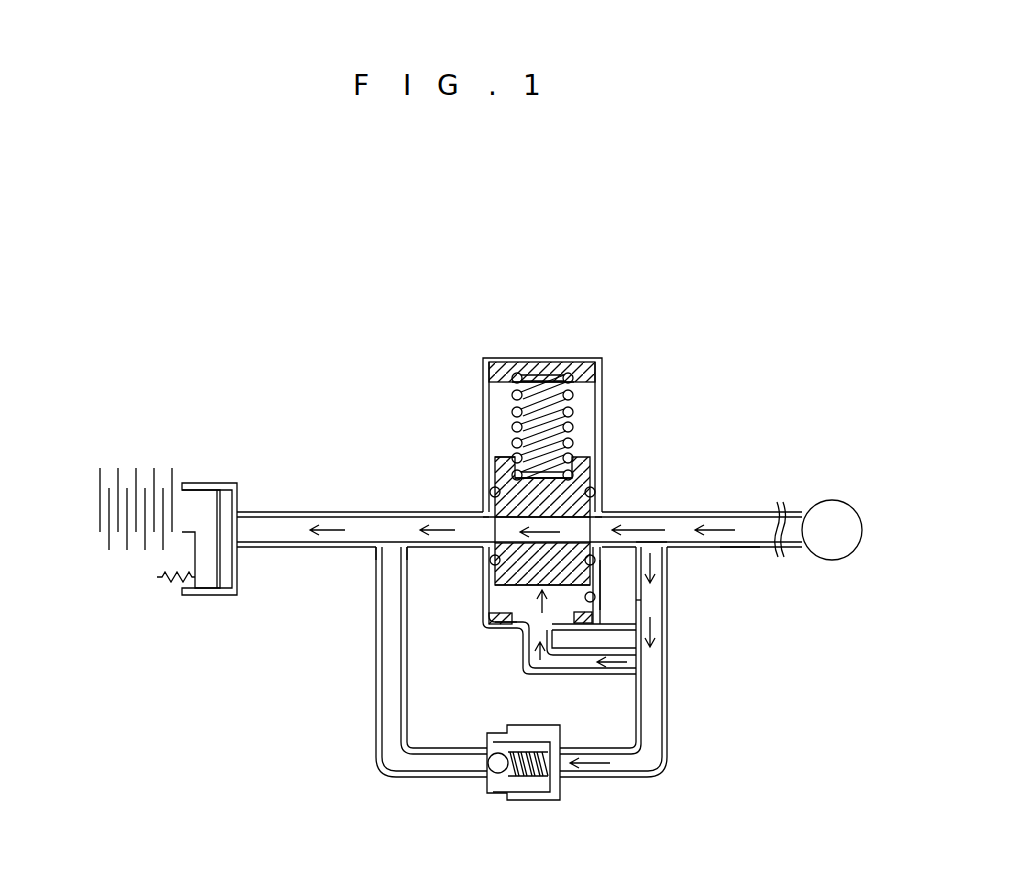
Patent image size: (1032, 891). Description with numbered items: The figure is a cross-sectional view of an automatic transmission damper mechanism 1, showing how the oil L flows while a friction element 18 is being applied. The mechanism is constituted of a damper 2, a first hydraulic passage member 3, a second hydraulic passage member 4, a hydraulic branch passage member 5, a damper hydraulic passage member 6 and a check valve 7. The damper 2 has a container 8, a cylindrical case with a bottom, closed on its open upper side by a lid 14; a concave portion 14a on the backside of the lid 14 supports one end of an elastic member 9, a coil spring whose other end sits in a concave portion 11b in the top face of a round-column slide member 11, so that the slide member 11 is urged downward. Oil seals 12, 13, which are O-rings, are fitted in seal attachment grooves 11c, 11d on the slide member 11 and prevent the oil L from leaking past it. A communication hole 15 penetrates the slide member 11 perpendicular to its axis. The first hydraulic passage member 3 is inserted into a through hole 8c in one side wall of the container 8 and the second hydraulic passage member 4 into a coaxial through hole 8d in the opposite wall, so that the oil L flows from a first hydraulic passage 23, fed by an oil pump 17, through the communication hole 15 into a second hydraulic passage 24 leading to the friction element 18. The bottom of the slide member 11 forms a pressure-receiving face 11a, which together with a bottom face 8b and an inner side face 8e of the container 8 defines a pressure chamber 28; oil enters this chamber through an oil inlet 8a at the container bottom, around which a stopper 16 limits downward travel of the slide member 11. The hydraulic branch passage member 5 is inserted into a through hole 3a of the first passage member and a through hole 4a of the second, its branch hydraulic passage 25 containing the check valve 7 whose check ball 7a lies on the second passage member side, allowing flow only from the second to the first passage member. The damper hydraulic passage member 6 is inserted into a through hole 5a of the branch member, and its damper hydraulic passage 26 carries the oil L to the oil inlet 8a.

The automatic transmission damper mechanism 1 is at (605, 264).
The damper 2 is at (476, 405).
The first hydraulic passage member 3 is at (706, 512).
The through hole 3a is at (667, 550).
The second hydraulic passage member 4 is at (318, 512).
The through hole 4a is at (380, 550).
The hydraulic branch passage member 5 is at (668, 626).
The through hole 5a is at (620, 650).
The damper hydraulic passage member 6 is at (562, 672).
The check valve 7 is at (515, 805).
The check ball 7a is at (500, 784).
The container 8 is at (604, 396).
The oil inlet 8a is at (536, 640).
The bottom face 8b is at (488, 630).
The through hole 8c is at (612, 518).
The through hole 8d is at (486, 513).
The inner side face 8e is at (646, 606).
The elastic member 9 is at (572, 406).
The slide member 11 is at (594, 470).
The pressure-receiving face 11a is at (492, 588).
The concave portion 11b is at (484, 442).
The seal attachment groove 11c is at (495, 470).
The seal attachment groove 11d is at (493, 565).
The oil seal 12 is at (596, 492).
The oil seal 13 is at (617, 585).
The lid 14 is at (551, 361).
The concave portion 14a is at (540, 374).
The communication hole 15 is at (478, 520).
The stopper 16 is at (540, 648).
The oil pump 17 is at (829, 500).
The friction element 18 is at (192, 451).
The first hydraulic passage 23 is at (742, 512).
The second hydraulic passage 24 is at (379, 512).
The branch hydraulic passage 25 is at (668, 604).
The damper hydraulic passage 26 is at (578, 675).
The pressure chamber 28 is at (490, 614).
The oil L is at (740, 547).